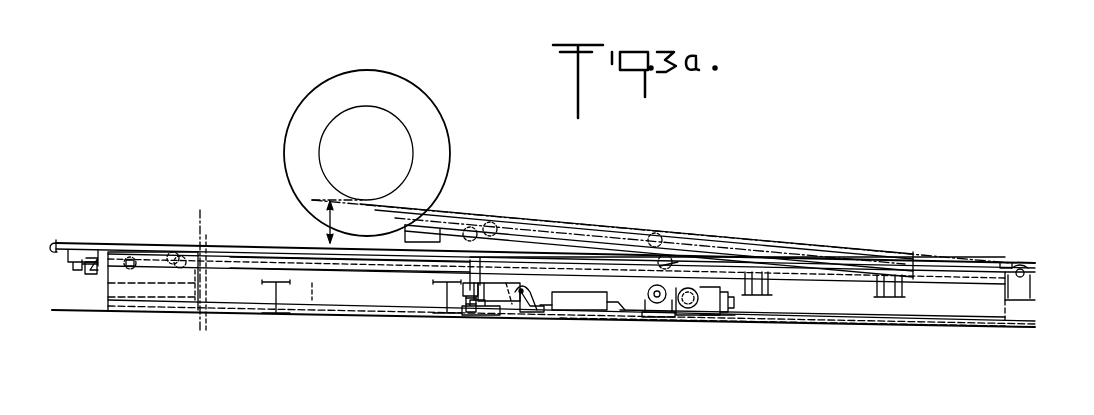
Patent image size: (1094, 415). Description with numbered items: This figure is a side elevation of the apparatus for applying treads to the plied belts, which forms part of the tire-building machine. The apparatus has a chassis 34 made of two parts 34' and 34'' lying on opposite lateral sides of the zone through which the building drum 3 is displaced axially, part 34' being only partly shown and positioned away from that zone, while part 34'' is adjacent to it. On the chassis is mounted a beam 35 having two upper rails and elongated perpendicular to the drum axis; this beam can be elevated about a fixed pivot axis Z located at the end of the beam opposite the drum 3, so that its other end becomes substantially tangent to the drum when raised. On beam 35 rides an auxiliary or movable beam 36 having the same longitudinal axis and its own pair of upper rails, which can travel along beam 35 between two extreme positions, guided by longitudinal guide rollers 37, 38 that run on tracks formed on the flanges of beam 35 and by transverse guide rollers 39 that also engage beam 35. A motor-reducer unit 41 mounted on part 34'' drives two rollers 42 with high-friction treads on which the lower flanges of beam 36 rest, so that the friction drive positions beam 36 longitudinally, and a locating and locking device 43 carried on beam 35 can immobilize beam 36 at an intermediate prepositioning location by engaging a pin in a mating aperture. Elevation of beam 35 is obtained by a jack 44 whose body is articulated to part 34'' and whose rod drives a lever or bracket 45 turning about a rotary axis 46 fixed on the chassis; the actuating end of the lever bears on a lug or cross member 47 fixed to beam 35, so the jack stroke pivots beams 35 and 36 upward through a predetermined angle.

The building drum 3 is at (448, 123).
The chassis 34 is at (566, 283).
The part of chassis 34' is at (157, 281).
The part of chassis 34'' is at (782, 334).
The beam 35 is at (175, 252).
The auxiliary or movable beam 36 is at (243, 268).
The longitudinal guide roller 37 is at (471, 226).
The longitudinal guide roller 38 is at (180, 256).
The transverse guide roller 39 is at (195, 272).
The motor-reducer unit 41 is at (700, 308).
The roller 42 is at (655, 305).
The locating and locking device 43 is at (456, 300).
The jack 44 is at (575, 311).
The lever or bracket 45 is at (520, 300).
The rotary axis 46 is at (521, 294).
The lug or cross member 47 is at (487, 316).
The pivot axis Z is at (1021, 269).